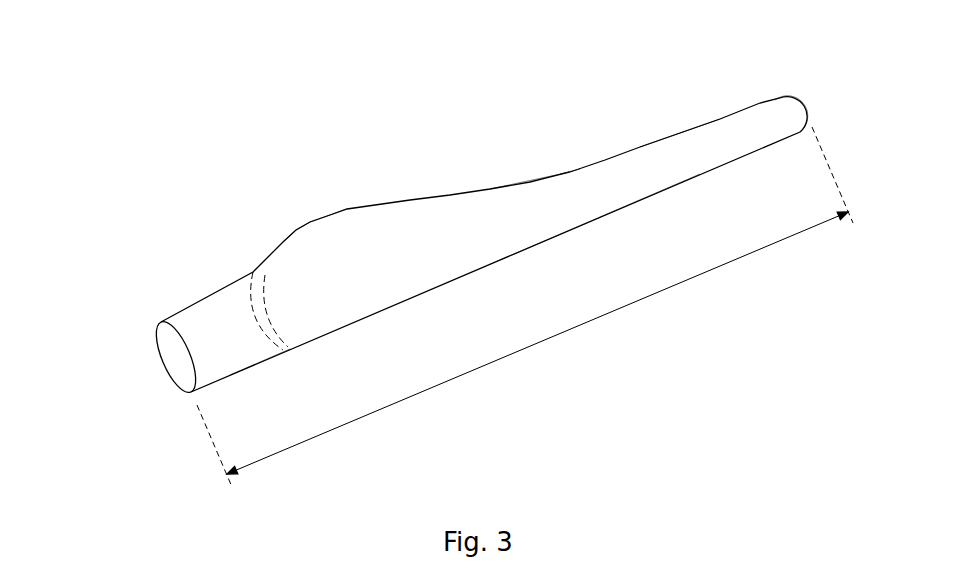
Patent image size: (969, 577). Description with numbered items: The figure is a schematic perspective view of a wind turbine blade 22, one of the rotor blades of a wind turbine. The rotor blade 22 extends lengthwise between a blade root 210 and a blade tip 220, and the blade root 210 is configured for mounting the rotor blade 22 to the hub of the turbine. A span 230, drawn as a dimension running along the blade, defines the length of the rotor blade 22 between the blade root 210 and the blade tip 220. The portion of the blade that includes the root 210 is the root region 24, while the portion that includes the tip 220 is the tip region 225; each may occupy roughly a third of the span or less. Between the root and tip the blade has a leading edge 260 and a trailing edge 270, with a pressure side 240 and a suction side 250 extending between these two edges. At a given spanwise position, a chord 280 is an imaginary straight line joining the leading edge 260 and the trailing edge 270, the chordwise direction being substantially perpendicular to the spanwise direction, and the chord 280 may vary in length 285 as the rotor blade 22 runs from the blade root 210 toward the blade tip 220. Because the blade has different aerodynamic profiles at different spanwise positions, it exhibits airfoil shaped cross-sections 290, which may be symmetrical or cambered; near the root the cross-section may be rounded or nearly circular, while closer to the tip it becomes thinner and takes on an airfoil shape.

The wind turbine blade 22 is at (248, 136).
The root region 24 is at (262, 379).
The blade root 210 is at (135, 369).
The blade tip 220 is at (824, 98).
The tip region 225 is at (641, 157).
The span 230 is at (540, 343).
The pressure side 240 is at (340, 247).
The suction side 250 is at (598, 232).
The leading edge 260 is at (617, 210).
The trailing edge 270 is at (540, 180).
The chord 280 is at (250, 303).
The chord length 285 is at (566, 158).
The airfoil shaped cross-section 290 is at (280, 293).